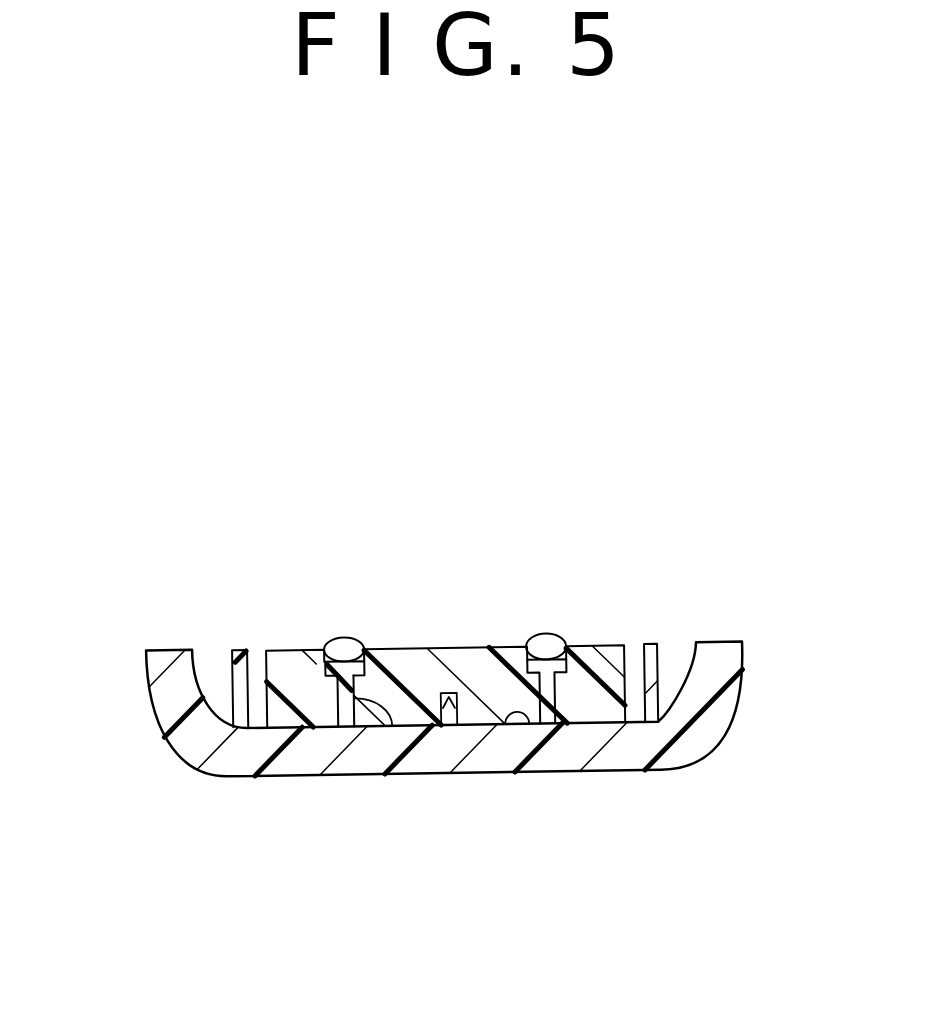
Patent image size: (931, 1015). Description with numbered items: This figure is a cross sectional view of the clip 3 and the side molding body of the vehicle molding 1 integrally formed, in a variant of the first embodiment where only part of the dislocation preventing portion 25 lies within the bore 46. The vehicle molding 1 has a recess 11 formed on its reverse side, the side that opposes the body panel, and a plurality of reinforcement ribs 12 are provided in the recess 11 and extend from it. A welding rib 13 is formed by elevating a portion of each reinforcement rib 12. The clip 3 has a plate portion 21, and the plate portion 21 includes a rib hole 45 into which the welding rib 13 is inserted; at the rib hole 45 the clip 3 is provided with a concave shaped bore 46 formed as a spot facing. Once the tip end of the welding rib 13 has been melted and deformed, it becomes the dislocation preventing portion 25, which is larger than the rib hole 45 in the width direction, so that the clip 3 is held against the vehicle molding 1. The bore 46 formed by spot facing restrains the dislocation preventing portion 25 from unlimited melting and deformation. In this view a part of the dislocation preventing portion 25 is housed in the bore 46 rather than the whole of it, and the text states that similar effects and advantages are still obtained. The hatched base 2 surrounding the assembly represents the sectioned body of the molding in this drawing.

The vehicle molding 1 is at (744, 548).
The base housing 2 is at (196, 797).
The clip 3 is at (280, 622).
The recess 11 is at (530, 727).
The reinforcement rib 12 is at (348, 708).
The welding rib 13 is at (377, 623).
The plate portion 21 is at (476, 660).
The dislocation preventing portion 25 is at (352, 648).
The rib hole 45 is at (392, 727).
The bore 46 is at (345, 637).